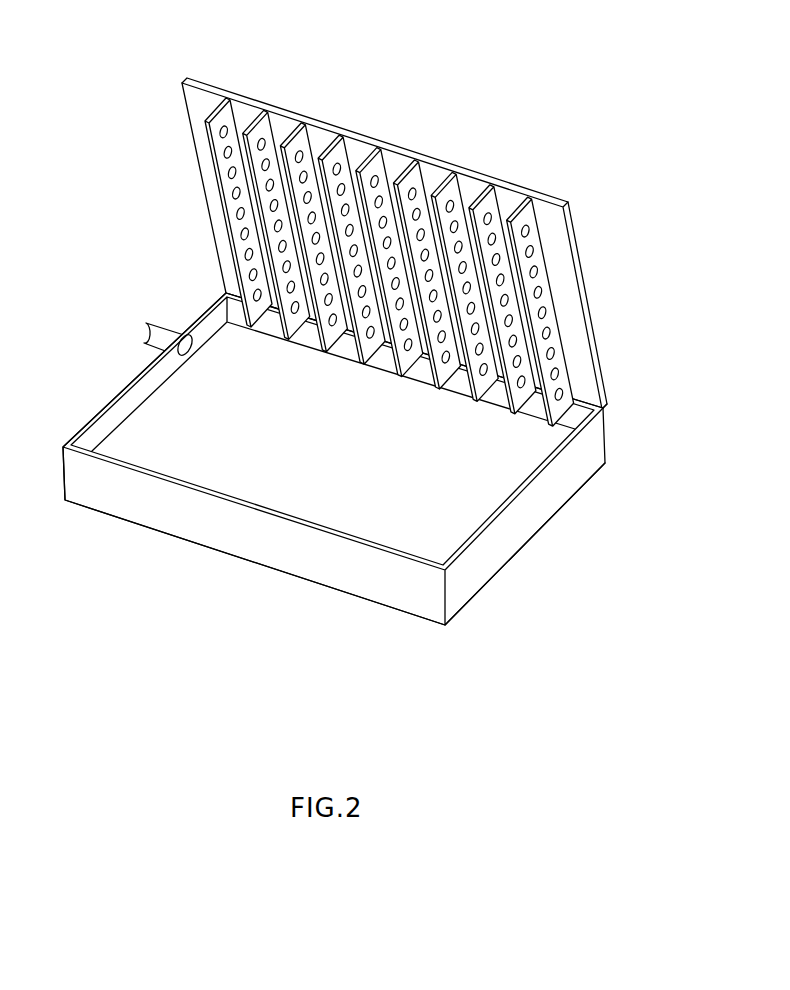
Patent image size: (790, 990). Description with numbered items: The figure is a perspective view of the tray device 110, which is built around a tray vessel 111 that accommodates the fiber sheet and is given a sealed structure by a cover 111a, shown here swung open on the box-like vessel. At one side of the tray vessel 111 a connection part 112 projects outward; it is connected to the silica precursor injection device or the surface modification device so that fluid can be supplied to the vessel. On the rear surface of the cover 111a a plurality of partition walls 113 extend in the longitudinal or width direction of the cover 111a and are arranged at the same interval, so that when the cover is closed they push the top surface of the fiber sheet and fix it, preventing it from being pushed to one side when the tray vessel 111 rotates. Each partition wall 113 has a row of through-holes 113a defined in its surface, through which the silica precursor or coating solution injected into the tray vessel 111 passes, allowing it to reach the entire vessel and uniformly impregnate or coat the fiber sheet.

The tray device 110 is at (411, 87).
The tray vessel 111 is at (598, 447).
The cover 111a is at (568, 286).
The connection part 112 is at (153, 322).
The partition walls 113 is at (524, 214).
The through-holes 113a is at (524, 230).